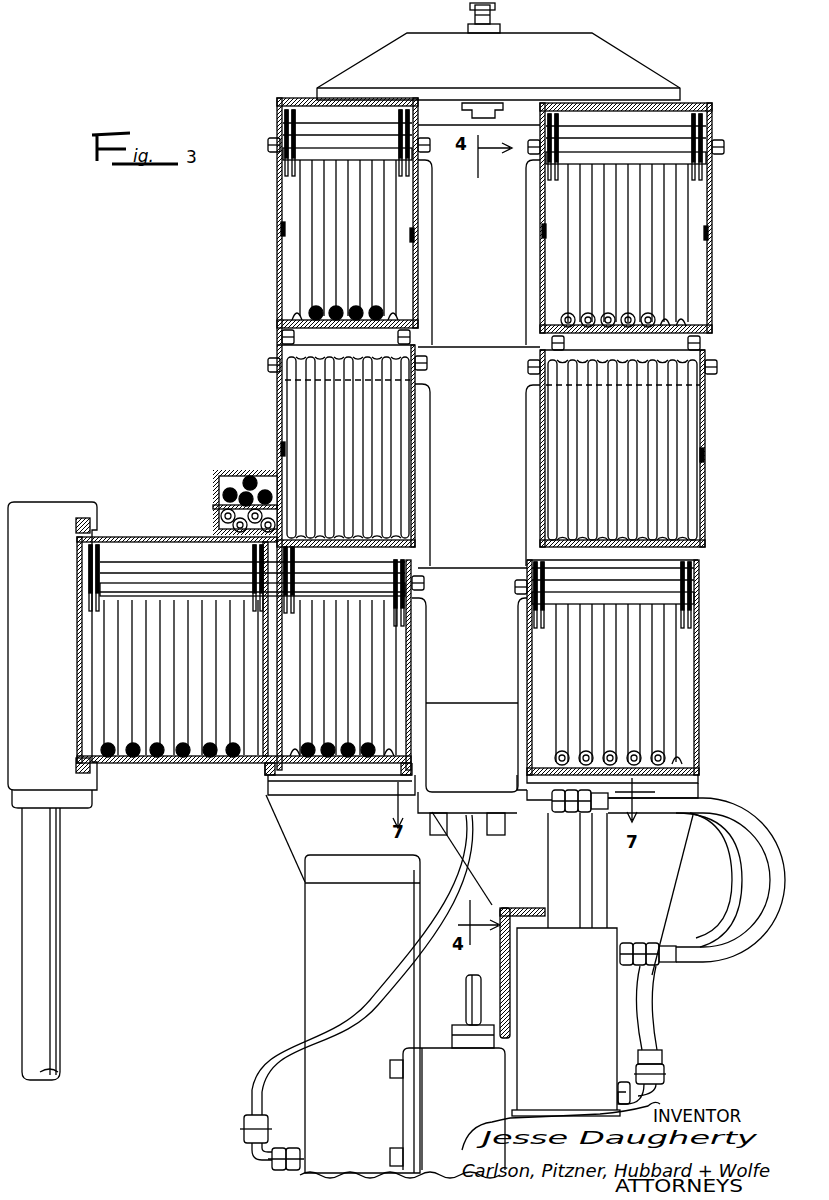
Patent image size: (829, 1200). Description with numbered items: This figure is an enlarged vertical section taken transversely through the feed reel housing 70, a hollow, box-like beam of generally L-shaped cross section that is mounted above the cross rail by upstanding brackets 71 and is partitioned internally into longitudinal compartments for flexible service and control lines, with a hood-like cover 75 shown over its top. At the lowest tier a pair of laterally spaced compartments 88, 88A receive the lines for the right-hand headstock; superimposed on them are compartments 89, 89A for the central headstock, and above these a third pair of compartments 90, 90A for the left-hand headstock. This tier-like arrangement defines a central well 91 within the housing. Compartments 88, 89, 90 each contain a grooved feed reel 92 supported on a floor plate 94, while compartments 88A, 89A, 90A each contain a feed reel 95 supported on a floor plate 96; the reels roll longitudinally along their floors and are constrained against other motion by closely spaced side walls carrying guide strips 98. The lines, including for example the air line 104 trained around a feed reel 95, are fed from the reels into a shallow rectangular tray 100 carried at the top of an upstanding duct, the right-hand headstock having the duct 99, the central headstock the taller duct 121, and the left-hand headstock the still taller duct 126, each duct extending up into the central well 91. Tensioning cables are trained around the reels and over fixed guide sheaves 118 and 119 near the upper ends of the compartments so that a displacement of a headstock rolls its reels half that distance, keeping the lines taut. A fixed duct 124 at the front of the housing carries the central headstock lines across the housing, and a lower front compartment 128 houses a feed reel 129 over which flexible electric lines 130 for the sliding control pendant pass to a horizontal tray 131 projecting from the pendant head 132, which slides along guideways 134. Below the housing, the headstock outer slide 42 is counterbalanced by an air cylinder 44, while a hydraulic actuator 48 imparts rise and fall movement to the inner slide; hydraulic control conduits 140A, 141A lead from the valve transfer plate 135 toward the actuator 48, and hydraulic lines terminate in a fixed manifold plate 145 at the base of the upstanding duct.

The hood 75 is at (380, 54).
The compartment 90 is at (312, 104).
The compartment 90A is at (604, 112).
The feed reel housing 70 is at (271, 201).
The tray 100 is at (440, 133).
The fixed guide sheaves 119 is at (286, 126).
The feed reel 92 is at (293, 258).
The feed reel 95 is at (690, 280).
The guide strips 98 is at (280, 228).
The duct 126 is at (495, 268).
The duct 121 is at (488, 469).
The duct 99 is at (484, 679).
The compartment 89 is at (280, 332).
The compartment 89A is at (708, 330).
The compartment 88 is at (414, 540).
The compartment 88A is at (706, 556).
The fixed guide sheaves 118 is at (278, 354).
The floor plate 94 is at (350, 328).
The floor plate 96 is at (640, 328).
The fixed duct 124 is at (225, 474).
The head 132 is at (42, 505).
The guideways 134 is at (78, 526).
The compartment 128 is at (178, 538).
The horizontal tray 131 is at (180, 571).
The feed reel 129 is at (92, 720).
The flexible electric lines 130 is at (152, 768).
The central well 91 is at (410, 750).
The upstanding brackets 71 is at (292, 827).
The transfer plate 135 is at (490, 836).
The plate 145 is at (553, 812).
The air cylinder 44 is at (305, 960).
The air line 104 is at (262, 1074).
The outer slide 42 is at (500, 1072).
The hydraulic actuator 48 is at (605, 938).
The hydraulic control conduit 140A is at (745, 946).
The hydraulic control conduit 141A is at (672, 988).